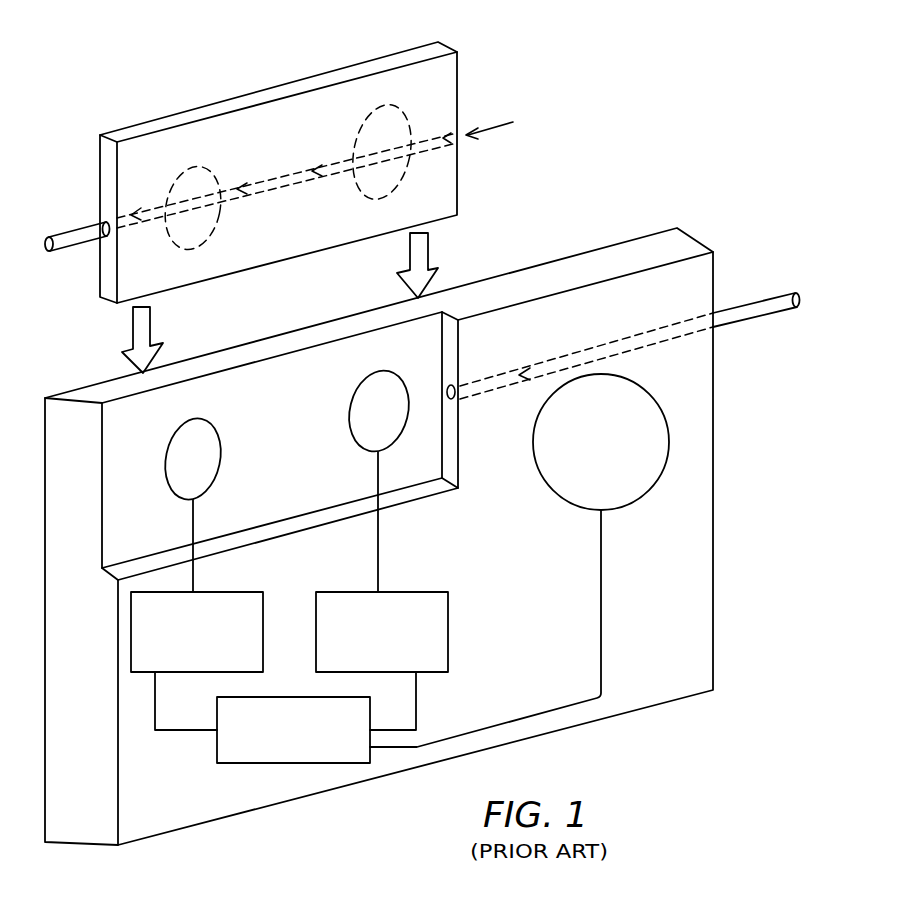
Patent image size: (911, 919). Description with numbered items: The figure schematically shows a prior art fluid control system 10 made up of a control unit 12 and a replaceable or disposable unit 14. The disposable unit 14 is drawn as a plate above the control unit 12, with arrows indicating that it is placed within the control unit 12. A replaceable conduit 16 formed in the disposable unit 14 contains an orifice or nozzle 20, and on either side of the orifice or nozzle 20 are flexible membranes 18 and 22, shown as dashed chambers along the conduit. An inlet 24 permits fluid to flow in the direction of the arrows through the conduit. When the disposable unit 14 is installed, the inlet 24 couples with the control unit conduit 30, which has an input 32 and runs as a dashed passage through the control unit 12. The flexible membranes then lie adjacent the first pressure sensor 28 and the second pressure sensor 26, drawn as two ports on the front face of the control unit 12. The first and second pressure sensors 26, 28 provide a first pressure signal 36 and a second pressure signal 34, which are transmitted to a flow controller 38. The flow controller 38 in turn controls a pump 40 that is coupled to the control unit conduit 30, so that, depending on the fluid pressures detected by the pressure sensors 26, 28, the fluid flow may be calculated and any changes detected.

The fluid control system 10 is at (570, 172).
The control unit 12 is at (608, 242).
The replaceable or disposable unit 14 is at (276, 78).
The replaceable conduit 16 is at (75, 230).
The flexible membrane 18 is at (219, 182).
The orifice or nozzle 20 is at (287, 179).
The flexible membrane 22 is at (384, 106).
The inlet 24 is at (459, 130).
The second pressure sensor 26 is at (218, 431).
The first pressure sensor 28 is at (350, 426).
The control unit conduit 30 is at (598, 346).
The input 32 is at (737, 308).
The second pressure signal 34 is at (264, 620).
The first pressure signal 36 is at (460, 570).
The flow controller 38 is at (227, 764).
The pump 40 is at (668, 424).